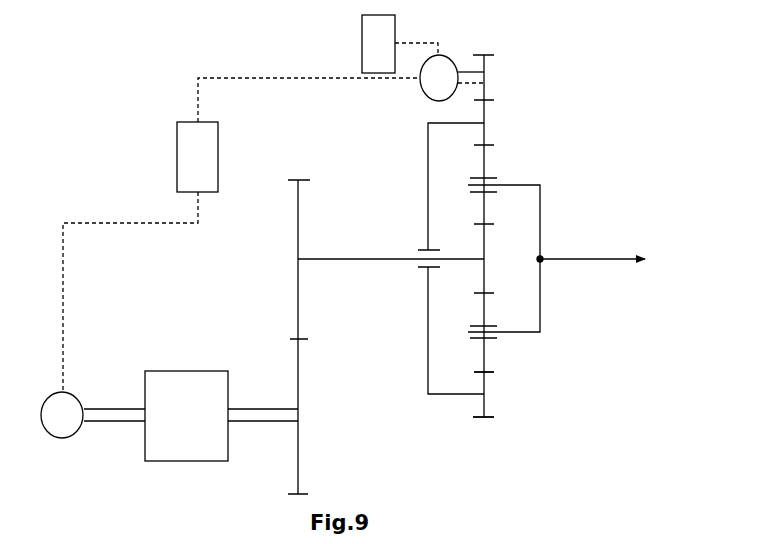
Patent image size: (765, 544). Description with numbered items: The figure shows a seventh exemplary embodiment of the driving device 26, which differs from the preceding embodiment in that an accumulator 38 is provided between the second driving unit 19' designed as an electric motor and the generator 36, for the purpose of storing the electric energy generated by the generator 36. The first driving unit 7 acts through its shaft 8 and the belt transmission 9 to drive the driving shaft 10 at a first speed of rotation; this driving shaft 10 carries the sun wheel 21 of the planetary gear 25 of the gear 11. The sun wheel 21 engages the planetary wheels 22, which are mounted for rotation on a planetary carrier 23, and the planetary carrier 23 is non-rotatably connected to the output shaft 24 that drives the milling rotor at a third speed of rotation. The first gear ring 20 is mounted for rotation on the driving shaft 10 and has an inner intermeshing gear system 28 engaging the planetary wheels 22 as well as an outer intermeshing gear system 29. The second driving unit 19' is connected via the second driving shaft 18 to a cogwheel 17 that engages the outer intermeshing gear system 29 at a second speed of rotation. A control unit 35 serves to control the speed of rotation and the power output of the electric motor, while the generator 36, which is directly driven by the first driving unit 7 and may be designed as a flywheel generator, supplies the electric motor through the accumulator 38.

The first driving unit 7 is at (168, 450).
The drive shaft (speed n1) 8 is at (265, 415).
The belt transmission 9 is at (258, 305).
The driving shaft 10 is at (385, 262).
The gear 11 is at (571, 440).
The cogwheel 17 is at (487, 90).
The second driving shaft 18 is at (462, 78).
The second driving unit 19' is at (436, 51).
The first gear ring 20 is at (452, 398).
The sun wheel 21 is at (487, 283).
The planetary wheels 22 is at (487, 167).
The planetary carrier 23 is at (542, 200).
The output shaft 24 is at (618, 262).
The planetary gear 25 is at (587, 366).
The driving device 26 is at (126, 132).
The inner intermeshing gear system 28 is at (487, 372).
The outer intermeshing gear system 29 is at (487, 420).
The control unit 35 is at (362, 40).
The generator 36 is at (62, 427).
The accumulator 38 is at (210, 150).